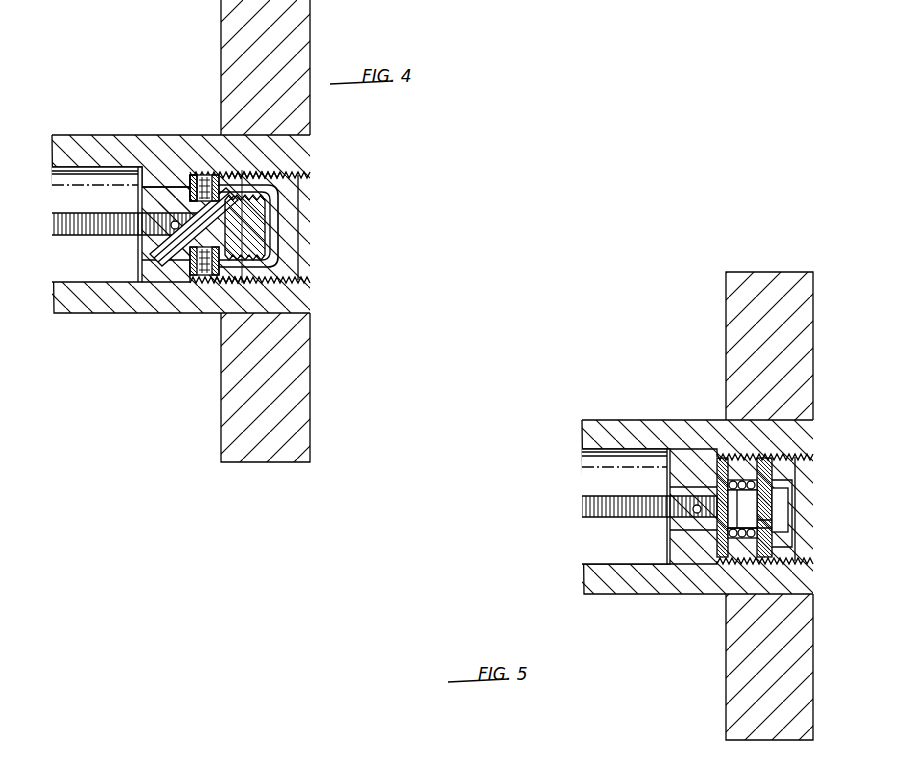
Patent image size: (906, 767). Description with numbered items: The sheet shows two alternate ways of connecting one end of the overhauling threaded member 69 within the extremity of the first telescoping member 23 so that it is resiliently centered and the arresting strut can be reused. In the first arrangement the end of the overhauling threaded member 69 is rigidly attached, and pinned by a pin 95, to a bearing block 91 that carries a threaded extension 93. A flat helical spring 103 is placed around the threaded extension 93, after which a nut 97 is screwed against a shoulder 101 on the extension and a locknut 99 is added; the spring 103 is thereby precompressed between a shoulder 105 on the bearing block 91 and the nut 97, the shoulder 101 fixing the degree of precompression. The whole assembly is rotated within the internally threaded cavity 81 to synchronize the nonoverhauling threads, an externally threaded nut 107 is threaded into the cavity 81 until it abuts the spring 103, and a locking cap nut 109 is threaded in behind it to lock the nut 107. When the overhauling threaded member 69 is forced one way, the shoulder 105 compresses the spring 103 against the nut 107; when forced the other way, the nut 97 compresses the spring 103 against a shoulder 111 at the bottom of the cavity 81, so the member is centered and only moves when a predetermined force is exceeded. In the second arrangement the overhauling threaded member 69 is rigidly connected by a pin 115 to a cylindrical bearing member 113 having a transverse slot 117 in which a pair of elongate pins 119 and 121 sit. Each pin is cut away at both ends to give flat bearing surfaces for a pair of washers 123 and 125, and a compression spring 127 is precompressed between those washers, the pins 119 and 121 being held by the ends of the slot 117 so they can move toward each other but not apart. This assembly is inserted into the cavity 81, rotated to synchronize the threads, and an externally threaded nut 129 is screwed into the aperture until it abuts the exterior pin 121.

In FIG. 4, the first telescoping member 23 is at (76, 140).
In FIG. 5, the first telescoping member 23 is at (600, 425).
In FIG. 4, the overhauling threaded member 69 is at (68, 218).
In FIG. 5, the overhauling threaded member 69 is at (591, 498).
In FIG. 4, the internally threaded cavity 81 is at (212, 278).
In FIG. 5, the internally threaded cavity 81 is at (745, 549).
In FIG. 4, the bearing block 91 is at (167, 197).
In FIG. 4, the threaded extension 93 is at (213, 238).
In FIG. 4, the pin 95 is at (173, 238).
In FIG. 4, the nut 97 is at (229, 190).
In FIG. 4, the locknut 99 is at (225, 194).
In FIG. 4, the shoulder 101 is at (227, 240).
In FIG. 4, the flat helical spring 103 is at (200, 176).
In FIG. 4, the shoulder 105 is at (188, 258).
In FIG. 4, the nut 107 is at (236, 275).
In FIG. 4, the locking cap nut 109 is at (297, 268).
In FIG. 4, the shoulder 111 is at (190, 182).
In FIG. 5, the cylindrical bearing member 113 is at (690, 495).
In FIG. 5, the pin 115 is at (690, 512).
In FIG. 5, the transverse slot 117 is at (785, 506).
In FIG. 5, the elongate pin 119 is at (716, 536).
In FIG. 5, the elongate pin 121 is at (770, 522).
In FIG. 5, the washer 123 is at (748, 463).
In FIG. 5, the washer 125 is at (755, 460).
In FIG. 5, the compression spring 127 is at (735, 486).
In FIG. 5, the externally threaded nut 129 is at (783, 476).